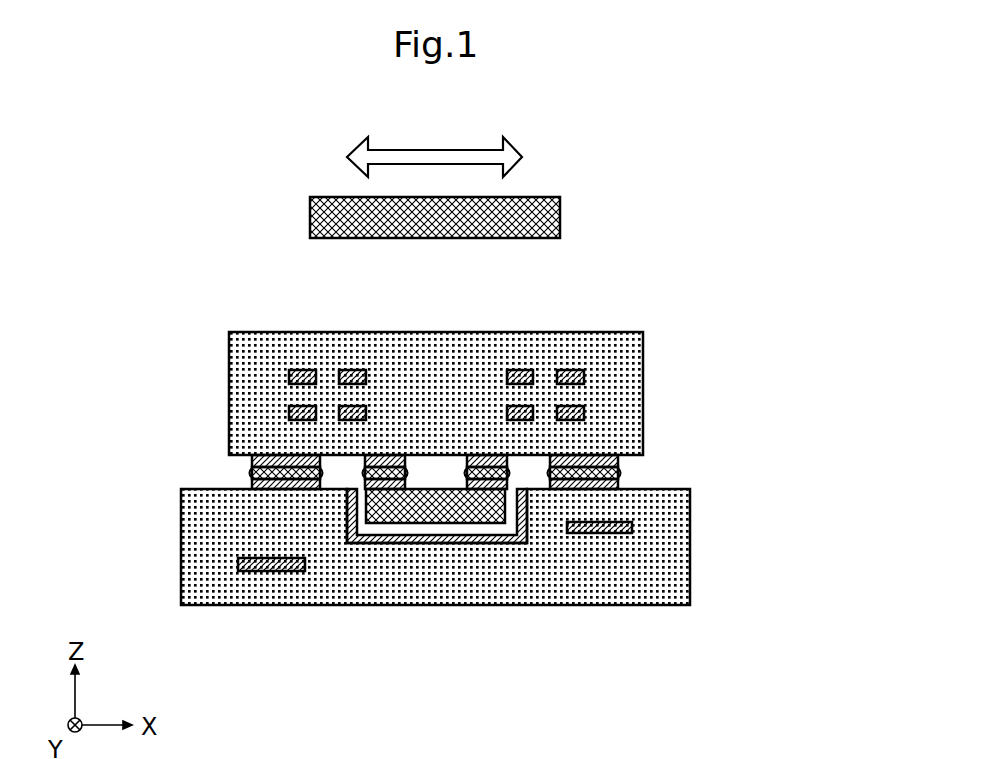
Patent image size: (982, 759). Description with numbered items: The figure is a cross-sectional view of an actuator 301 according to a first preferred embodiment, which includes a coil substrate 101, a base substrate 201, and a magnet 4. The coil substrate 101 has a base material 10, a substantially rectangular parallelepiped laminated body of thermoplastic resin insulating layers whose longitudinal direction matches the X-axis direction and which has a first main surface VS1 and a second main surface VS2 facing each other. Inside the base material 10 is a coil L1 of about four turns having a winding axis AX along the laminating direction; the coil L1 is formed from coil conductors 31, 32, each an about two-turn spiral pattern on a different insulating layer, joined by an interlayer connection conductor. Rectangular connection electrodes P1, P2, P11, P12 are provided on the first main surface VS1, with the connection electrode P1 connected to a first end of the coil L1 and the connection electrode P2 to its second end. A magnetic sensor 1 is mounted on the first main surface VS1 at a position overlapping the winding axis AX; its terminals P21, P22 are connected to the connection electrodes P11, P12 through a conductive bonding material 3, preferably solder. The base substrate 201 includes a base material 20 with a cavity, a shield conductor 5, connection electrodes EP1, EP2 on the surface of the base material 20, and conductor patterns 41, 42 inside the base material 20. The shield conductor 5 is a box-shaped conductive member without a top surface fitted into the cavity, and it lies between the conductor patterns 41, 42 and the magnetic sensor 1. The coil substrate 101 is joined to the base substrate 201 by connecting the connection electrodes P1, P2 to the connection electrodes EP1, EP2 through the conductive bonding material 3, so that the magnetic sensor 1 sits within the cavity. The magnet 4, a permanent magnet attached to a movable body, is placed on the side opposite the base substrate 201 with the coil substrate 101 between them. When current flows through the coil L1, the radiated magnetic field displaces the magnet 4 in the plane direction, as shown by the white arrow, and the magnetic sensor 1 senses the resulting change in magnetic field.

The actuator 301 is at (796, 134).
The coil substrate 101 is at (588, 315).
The base substrate 201 is at (707, 548).
The base material 10 is at (643, 332).
The base material 20 is at (692, 605).
The magnetic sensor 1 is at (508, 524).
The conductive bonding material 3 is at (252, 472).
The magnet 4 is at (560, 198).
The shield conductor 5 is at (522, 518).
The coil conductor 31 is at (289, 413).
The coil conductor 32 is at (289, 377).
The conductor pattern 41 is at (275, 572).
The conductor pattern 42 is at (600, 535).
The coil L1 is at (278, 252).
The connection electrode P1 is at (262, 458).
The connection electrode P2 is at (605, 460).
The connection electrode P11 is at (389, 458).
The connection electrode P12 is at (481, 458).
The terminal P21 is at (383, 484).
The terminal P22 is at (486, 485).
The connection electrode EP1 is at (268, 486).
The connection electrode EP2 is at (618, 484).
The first main surface VS1 is at (335, 455).
The second main surface VS2 is at (316, 332).
The winding axis AX is at (435, 478).